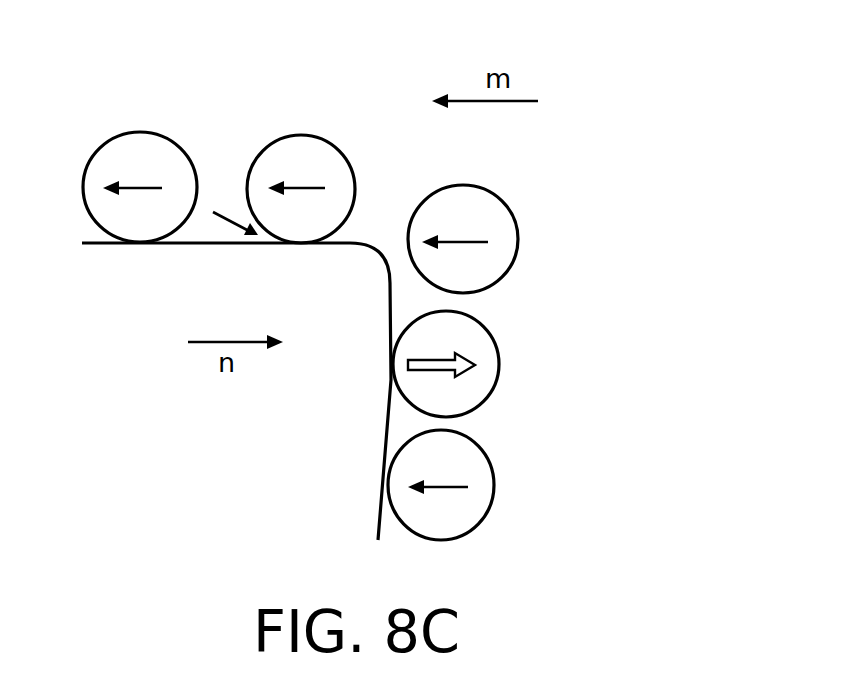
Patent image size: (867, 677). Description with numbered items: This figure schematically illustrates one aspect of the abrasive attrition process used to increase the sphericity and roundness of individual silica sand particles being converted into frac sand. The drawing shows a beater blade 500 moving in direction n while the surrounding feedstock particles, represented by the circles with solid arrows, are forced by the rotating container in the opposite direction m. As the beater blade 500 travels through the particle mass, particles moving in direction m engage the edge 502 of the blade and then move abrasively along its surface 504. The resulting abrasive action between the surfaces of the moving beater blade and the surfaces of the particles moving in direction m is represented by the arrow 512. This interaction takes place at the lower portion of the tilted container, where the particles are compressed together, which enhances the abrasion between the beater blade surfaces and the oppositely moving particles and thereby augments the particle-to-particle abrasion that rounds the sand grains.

The beater blade 500 is at (190, 240).
The edge 502 is at (390, 325).
The surface 504 is at (345, 243).
The arrow 512 is at (226, 215).